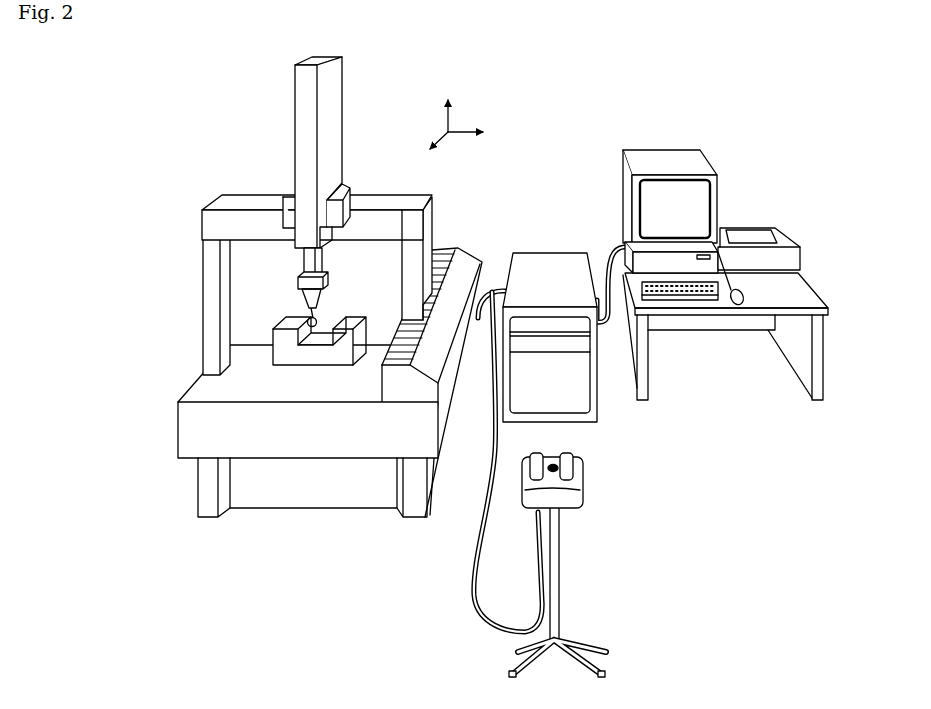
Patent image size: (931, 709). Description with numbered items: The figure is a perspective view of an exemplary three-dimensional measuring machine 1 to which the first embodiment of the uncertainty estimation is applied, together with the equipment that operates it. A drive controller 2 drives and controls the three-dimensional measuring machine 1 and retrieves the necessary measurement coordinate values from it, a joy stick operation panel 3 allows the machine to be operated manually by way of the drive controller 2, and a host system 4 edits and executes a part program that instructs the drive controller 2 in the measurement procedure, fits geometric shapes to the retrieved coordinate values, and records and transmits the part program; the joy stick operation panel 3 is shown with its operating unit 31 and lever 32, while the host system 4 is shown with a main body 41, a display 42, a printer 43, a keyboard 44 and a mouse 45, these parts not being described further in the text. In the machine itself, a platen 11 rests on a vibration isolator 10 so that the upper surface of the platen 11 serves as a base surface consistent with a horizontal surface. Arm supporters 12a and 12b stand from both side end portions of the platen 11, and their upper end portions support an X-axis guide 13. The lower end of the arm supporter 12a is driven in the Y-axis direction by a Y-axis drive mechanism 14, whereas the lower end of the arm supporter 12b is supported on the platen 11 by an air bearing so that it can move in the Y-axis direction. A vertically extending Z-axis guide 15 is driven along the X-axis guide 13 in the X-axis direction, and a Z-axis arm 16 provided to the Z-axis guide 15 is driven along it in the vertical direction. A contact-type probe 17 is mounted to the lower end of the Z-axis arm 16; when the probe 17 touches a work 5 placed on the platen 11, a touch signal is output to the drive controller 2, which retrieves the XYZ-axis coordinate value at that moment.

The three-dimensional measuring machine 1 is at (363, 92).
The drive controller 2 is at (552, 262).
The joy stick operation panel 3 is at (606, 492).
The host system 4 is at (738, 168).
The work 5 is at (280, 358).
The vibration isolator 10 is at (200, 493).
The platen 11 is at (178, 432).
The arm supporter 12a is at (433, 228).
The arm supporter 12b is at (204, 304).
The X-axis guide 13 is at (249, 200).
The Y-axis drive mechanism 14 is at (470, 258).
The Z-axis guide 15 is at (297, 120).
The Z-axis arm 16 is at (326, 259).
The contact-type probe 17 is at (309, 318).
The joystick unit 31 is at (573, 464).
The joystick lever 32 is at (552, 462).
The computer main body 41 is at (618, 244).
The display 42 is at (662, 153).
The printer 43 is at (782, 246).
The keyboard 44 is at (698, 301).
The mouse 45 is at (748, 305).